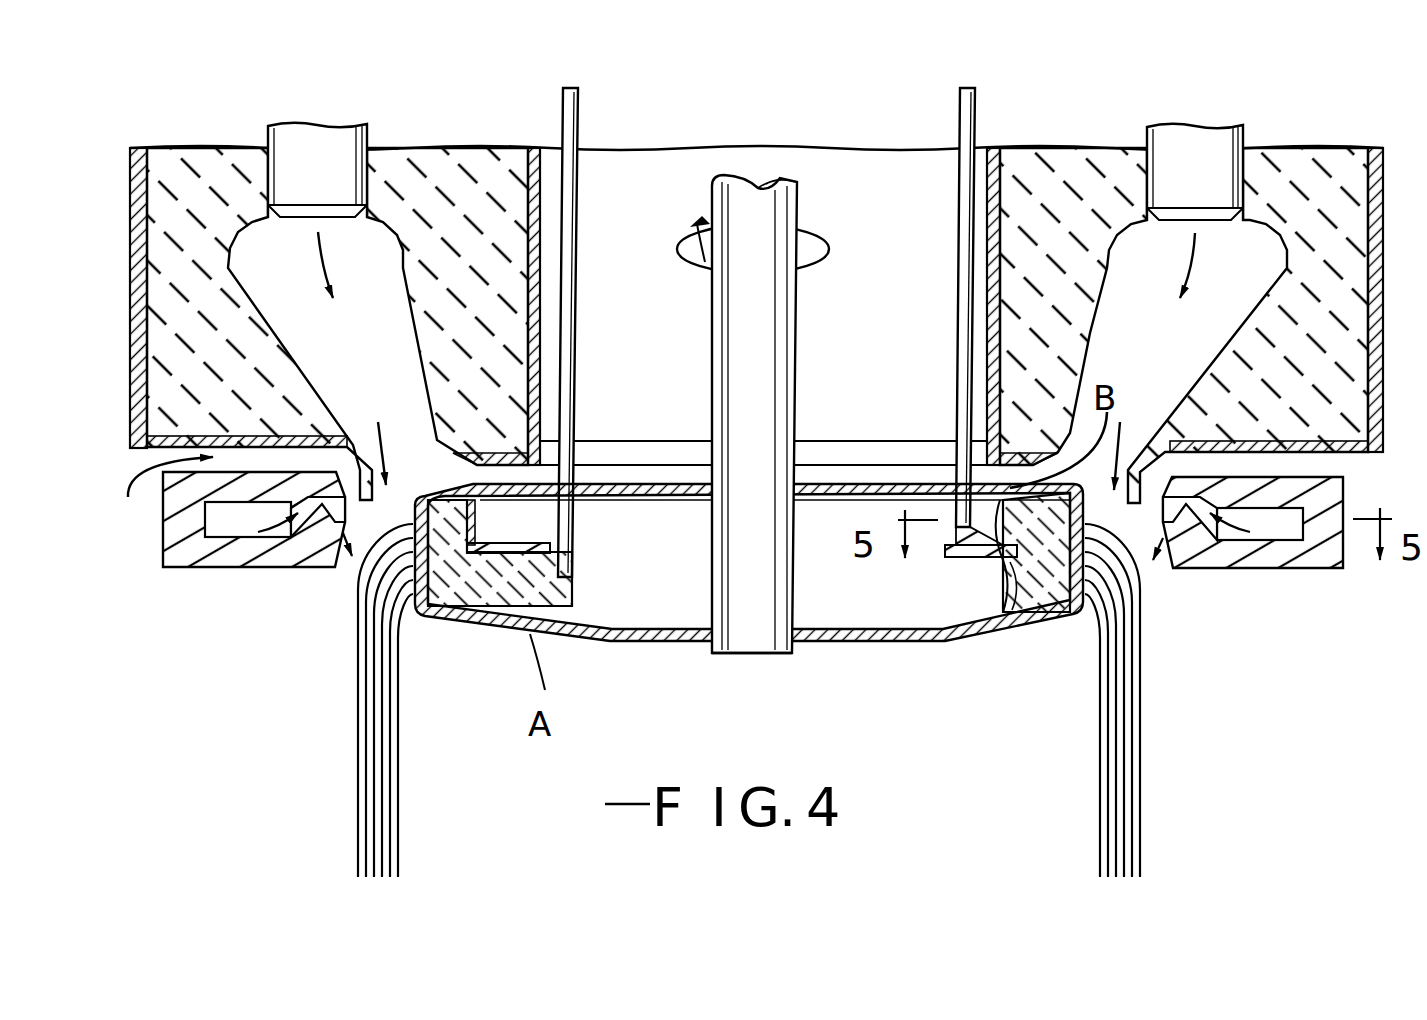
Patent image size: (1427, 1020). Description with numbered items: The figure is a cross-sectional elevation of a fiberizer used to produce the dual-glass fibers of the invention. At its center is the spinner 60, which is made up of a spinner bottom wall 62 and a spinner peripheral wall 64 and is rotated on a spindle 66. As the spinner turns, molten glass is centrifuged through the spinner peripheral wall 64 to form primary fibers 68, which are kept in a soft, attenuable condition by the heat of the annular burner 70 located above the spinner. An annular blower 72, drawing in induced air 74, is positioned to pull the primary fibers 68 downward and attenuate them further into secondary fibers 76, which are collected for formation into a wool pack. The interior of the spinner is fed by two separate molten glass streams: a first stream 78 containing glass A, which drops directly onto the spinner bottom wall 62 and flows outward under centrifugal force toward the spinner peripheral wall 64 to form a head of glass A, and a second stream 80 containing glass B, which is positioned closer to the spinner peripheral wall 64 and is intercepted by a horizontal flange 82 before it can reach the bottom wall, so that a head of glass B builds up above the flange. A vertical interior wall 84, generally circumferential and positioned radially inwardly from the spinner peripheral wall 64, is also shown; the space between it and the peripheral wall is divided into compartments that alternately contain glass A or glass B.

The spinner 60 is at (842, 483).
The spinner bottom wall 62 is at (1042, 640).
The spinner peripheral wall 64 is at (437, 612).
The spindle 66 is at (800, 215).
The primary fibers 68 is at (345, 598).
The annular burner 70 is at (392, 170).
The annular blower 72 is at (170, 545).
The induced air 74 is at (143, 497).
The secondary fibers 76 is at (350, 801).
The first stream 78 is at (582, 122).
The second stream 80 is at (978, 118).
The horizontal flange 82 is at (957, 573).
The vertical interior wall 84 is at (1000, 592).